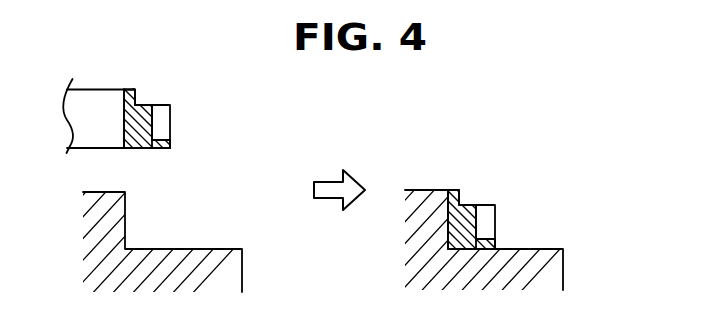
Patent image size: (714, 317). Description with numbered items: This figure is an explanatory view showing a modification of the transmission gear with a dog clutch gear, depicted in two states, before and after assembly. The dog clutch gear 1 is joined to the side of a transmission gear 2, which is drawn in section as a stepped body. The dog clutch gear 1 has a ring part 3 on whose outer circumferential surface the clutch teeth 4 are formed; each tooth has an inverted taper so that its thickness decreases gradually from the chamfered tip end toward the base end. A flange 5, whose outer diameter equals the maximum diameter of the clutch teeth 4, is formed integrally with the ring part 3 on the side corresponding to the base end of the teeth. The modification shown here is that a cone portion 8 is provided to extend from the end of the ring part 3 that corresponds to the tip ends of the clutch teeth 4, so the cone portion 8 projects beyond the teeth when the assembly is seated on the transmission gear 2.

The dog clutch gear 1 is at (108, 68).
The transmission gear 2 is at (248, 266).
The ring part 3 is at (141, 108).
The clutch teeth 4 is at (170, 121).
The flange 5 is at (171, 139).
The cone portion 8 is at (134, 90).